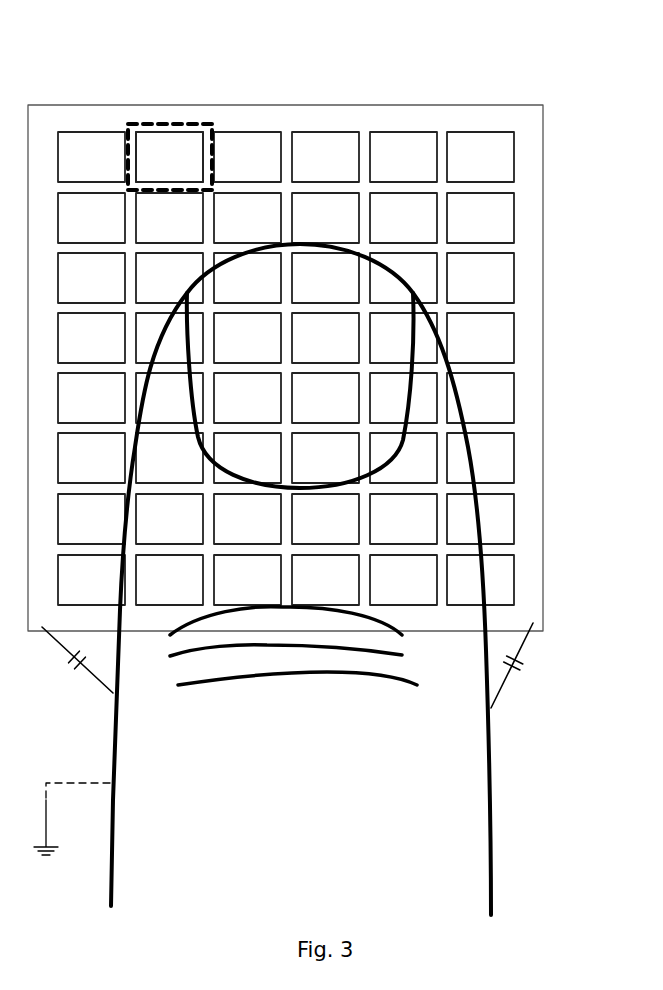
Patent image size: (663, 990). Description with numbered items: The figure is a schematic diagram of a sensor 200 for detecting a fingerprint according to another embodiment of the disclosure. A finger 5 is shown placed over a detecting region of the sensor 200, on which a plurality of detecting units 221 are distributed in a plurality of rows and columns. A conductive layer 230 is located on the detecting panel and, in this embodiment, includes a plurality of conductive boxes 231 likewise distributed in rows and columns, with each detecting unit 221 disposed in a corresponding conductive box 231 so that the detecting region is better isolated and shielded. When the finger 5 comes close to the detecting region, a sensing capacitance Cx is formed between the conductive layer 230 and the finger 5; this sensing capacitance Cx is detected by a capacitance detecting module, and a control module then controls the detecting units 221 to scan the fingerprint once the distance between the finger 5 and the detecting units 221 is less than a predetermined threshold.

The sensor 200 is at (315, 88).
The conductive layer 230 is at (408, 113).
The detecting unit 221 is at (162, 152).
The conductive box 231 is at (150, 122).
The sensing capacitance Cx is at (525, 667).
The finger 5 is at (407, 790).